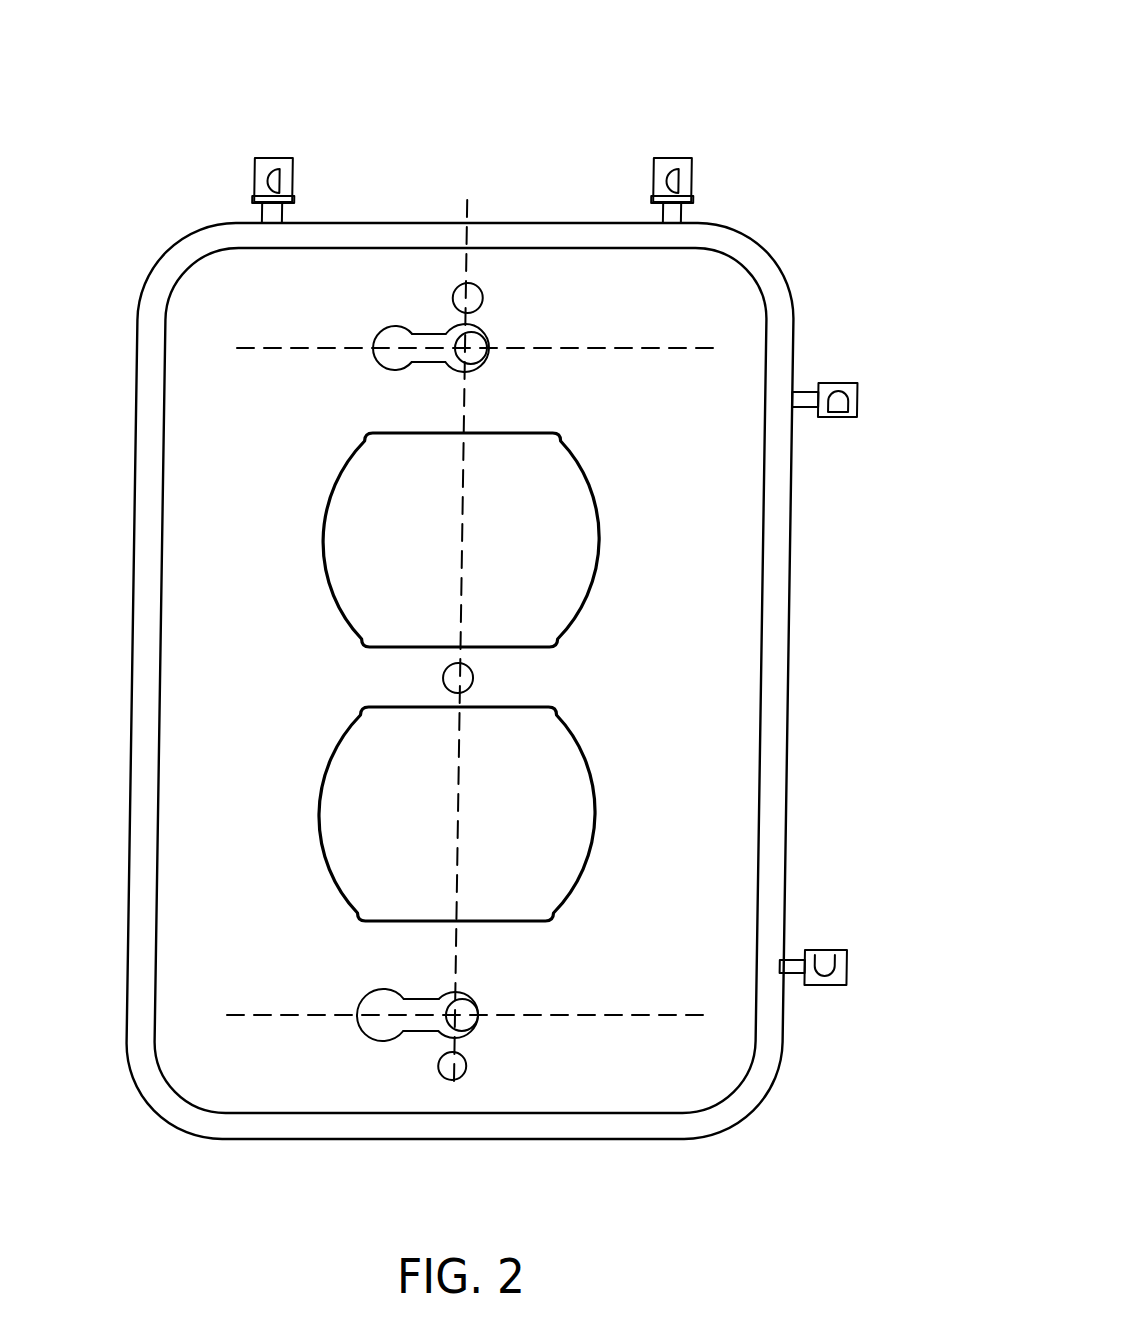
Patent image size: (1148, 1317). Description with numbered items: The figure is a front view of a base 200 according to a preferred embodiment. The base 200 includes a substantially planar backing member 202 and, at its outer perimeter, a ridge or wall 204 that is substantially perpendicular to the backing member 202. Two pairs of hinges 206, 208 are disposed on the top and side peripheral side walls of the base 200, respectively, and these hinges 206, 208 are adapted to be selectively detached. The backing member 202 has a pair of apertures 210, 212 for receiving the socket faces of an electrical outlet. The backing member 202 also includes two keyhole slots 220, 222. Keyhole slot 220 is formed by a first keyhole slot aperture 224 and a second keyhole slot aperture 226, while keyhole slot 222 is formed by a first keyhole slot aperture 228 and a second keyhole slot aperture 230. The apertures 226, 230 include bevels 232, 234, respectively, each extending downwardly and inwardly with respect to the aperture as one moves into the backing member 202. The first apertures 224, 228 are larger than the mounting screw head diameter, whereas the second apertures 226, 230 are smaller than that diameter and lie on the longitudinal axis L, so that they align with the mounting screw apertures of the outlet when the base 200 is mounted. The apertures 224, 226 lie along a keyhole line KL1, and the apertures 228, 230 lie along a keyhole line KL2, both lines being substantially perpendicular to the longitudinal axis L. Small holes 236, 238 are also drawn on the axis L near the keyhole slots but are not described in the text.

The base 200 is at (421, 102).
The backing member 202 is at (712, 332).
The ridge or wall 204 is at (748, 254).
The hinges 206 is at (277, 183).
The hinges 208 is at (838, 396).
The aperture 210 is at (448, 555).
The aperture 212 is at (447, 827).
The keyhole slot 220 is at (446, 356).
The keyhole slot 222 is at (424, 1005).
The first keyhole slot aperture 224 is at (391, 350).
The second keyhole slot aperture 226 is at (474, 330).
The first keyhole slot aperture 228 is at (386, 1012).
The second keyhole slot aperture 230 is at (474, 993).
The bevel 232 is at (480, 366).
The bevel 234 is at (478, 1034).
The first alignment hole 236 is at (467, 298).
The second alignment hole 238 is at (452, 1074).
The longitudinal axis L is at (466, 630).
The keyhole line KL1 is at (445, 346).
The keyhole line KL2 is at (435, 1014).